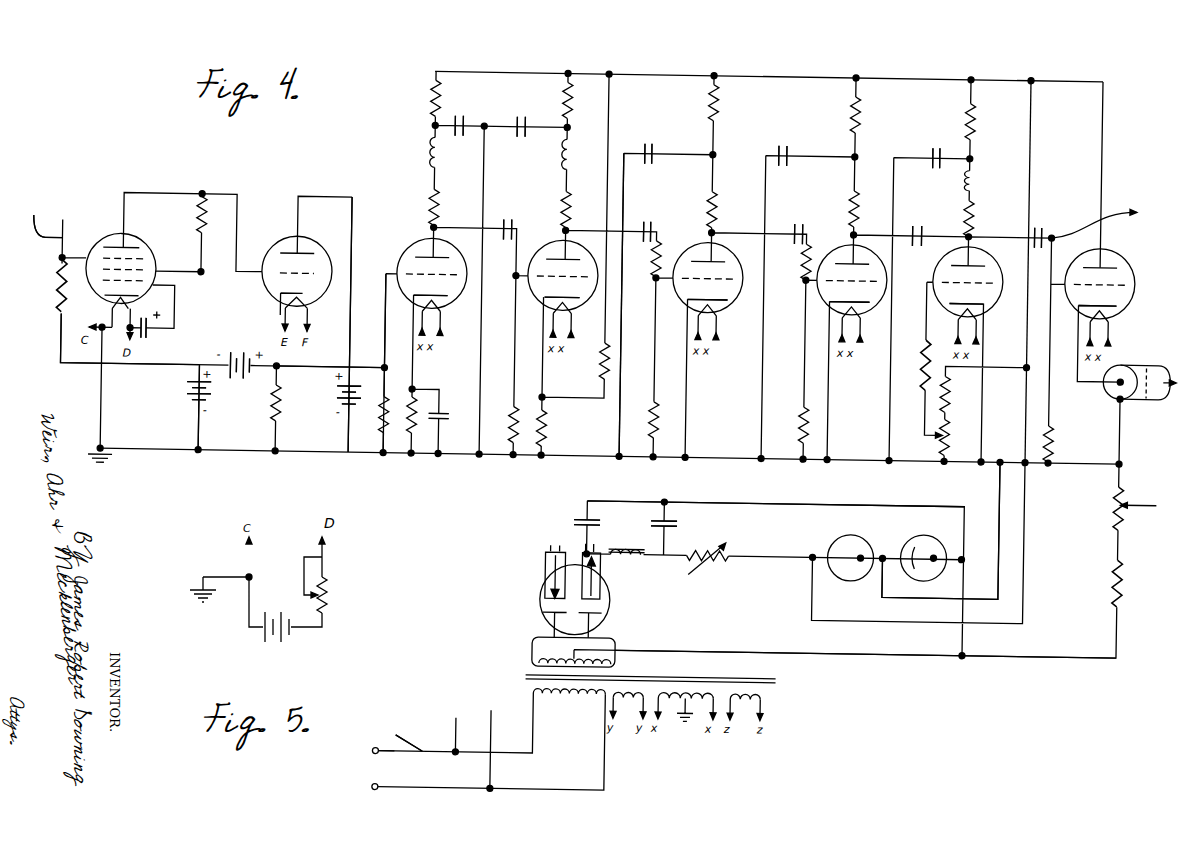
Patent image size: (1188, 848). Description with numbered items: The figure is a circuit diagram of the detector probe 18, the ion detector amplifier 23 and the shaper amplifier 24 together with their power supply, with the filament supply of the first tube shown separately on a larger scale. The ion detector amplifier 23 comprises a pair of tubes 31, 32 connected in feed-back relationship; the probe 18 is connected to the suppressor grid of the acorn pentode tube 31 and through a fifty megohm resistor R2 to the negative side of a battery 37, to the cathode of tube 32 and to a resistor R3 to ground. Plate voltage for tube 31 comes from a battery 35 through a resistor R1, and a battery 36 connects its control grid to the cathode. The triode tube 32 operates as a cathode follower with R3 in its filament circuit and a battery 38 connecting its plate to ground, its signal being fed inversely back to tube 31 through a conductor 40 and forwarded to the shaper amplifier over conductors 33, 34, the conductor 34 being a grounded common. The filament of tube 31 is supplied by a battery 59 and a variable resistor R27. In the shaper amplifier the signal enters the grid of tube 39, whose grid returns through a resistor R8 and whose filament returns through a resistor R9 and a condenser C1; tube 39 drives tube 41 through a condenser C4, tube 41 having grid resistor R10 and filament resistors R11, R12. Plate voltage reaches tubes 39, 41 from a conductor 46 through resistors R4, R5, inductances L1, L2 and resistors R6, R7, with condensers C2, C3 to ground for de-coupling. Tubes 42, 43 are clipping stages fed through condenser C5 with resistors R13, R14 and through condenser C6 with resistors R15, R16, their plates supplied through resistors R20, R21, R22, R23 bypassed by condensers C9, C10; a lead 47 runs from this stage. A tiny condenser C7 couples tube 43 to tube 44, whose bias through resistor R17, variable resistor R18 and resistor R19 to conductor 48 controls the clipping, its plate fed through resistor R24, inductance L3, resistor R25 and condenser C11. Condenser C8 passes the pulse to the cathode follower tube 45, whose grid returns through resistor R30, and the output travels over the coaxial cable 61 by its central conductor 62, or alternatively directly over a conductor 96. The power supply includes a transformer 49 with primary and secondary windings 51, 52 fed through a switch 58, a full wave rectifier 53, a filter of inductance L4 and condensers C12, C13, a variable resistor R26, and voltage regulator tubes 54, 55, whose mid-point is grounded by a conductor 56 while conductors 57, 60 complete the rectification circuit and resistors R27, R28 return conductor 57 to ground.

In FIG. 4, the detector probe 18 is at (40, 219).
In FIG. 4, the ion detector amplifier 23 is at (238, 160).
In FIG. 4, the shaper amplifier 24 is at (770, 64).
In FIG. 4, the tube 31 is at (137, 250).
In FIG. 4, the tube 32 is at (314, 247).
In FIG. 4, the conductor 33 is at (362, 368).
In FIG. 4, the conductor 34 is at (238, 458).
In FIG. 4, the battery 35 is at (190, 404).
In FIG. 4, the battery 36 is at (151, 346).
In FIG. 4, the battery 37 is at (246, 386).
In FIG. 4, the battery 38 is at (338, 412).
In FIG. 4, the tube 39 is at (414, 248).
In FIG. 4, the conductor 40 is at (88, 374).
In FIG. 4, the tube 41 is at (551, 248).
In FIG. 4, the tube 42 is at (701, 252).
In FIG. 4, the tube 43 is at (845, 252).
In FIG. 4, the tube 44 is at (961, 252).
In FIG. 4, the isolating output amplifier tube 45 is at (1126, 264).
In FIG. 4, the conductor 46 is at (524, 74).
In FIG. 4, the conductor 47 is at (626, 230).
In FIG. 4, the conductor 48 is at (1029, 198).
In FIG. 4, the transformer 49 is at (631, 682).
In FIG. 4, the primary winding 51 is at (569, 705).
In FIG. 4, the secondary winding 52 is at (534, 654).
In FIG. 4, the full wave rectifier 53 is at (540, 602).
In FIG. 4, the voltage regulator tube 54 is at (858, 544).
In FIG. 4, the voltage regulator tube 55 is at (922, 542).
In FIG. 4, the conductor 56 is at (998, 502).
In FIG. 4, the conductor 57 is at (776, 652).
In FIG. 4, the switch 58 is at (412, 754).
In FIG. 5, the battery 59 is at (274, 644).
In FIG. 4, the conductor 60 is at (808, 504).
In FIG. 4, the coaxial cable 61 is at (1142, 364).
In FIG. 4, the central conductor 62 is at (1141, 398).
In FIG. 4, the conductor 96 is at (1097, 213).
In FIG. 4, the resistor R1 is at (211, 215).
In FIG. 4, the resistor R2 is at (46, 285).
In FIG. 4, the resistor R3 is at (289, 403).
In FIG. 4, the resistor R4 is at (445, 98).
In FIG. 4, the resistor R5 is at (577, 100).
In FIG. 4, the resistor R6 is at (444, 207).
In FIG. 4, the resistor R7 is at (576, 209).
In FIG. 4, the resistor R8 is at (374, 414).
In FIG. 4, the resistor R9 is at (403, 415).
In FIG. 4, the resistor R10 is at (502, 424).
In FIG. 4, the resistor R11 is at (593, 361).
In FIG. 4, the resistor R12 is at (556, 428).
In FIG. 4, the resistor R13 is at (644, 258).
In FIG. 4, the resistor R14 is at (642, 419).
In FIG. 4, the resistor R15 is at (793, 264).
In FIG. 4, the resistor R16 is at (790, 425).
In FIG. 4, the resistor R17 is at (910, 365).
In FIG. 4, the variable resistor R18 is at (959, 437).
In FIG. 4, the resistor R19 is at (960, 394).
In FIG. 4, the resistor R20 is at (728, 103).
In FIG. 4, the resistor R21 is at (870, 115).
In FIG. 4, the resistor R22 is at (727, 210).
In FIG. 4, the resistor R23 is at (869, 209).
In FIG. 4, the resistor R24 is at (985, 122).
In FIG. 4, the resistor R25 is at (985, 219).
In FIG. 4, the variable resistor R26 is at (708, 564).
In FIG. 4, the resistor R27 is at (1132, 583).
In FIG. 5, the resistor R27 is at (341, 595).
In FIG. 4, the resistor R28 is at (1101, 509).
In FIG. 4, the resistor R30 is at (1064, 444).
In FIG. 4, the condenser C1 is at (446, 401).
In FIG. 4, the condenser C2 is at (467, 117).
In FIG. 4, the condenser C3 is at (519, 116).
In FIG. 4, the condenser C4 is at (502, 218).
In FIG. 4, the condenser C5 is at (657, 224).
In FIG. 4, the condenser C6 is at (801, 226).
In FIG. 4, the condenser C7 is at (916, 227).
In FIG. 4, the condenser C8 is at (1042, 231).
In FIG. 4, the condenser C9 is at (648, 145).
In FIG. 4, the condenser C10 is at (794, 146).
In FIG. 4, the condenser C11 is at (942, 148).
In FIG. 4, the condenser C12 is at (573, 523).
In FIG. 4, the condenser C13 is at (676, 525).
In FIG. 4, the inductance L1 is at (445, 152).
In FIG. 4, the inductance L2 is at (577, 154).
In FIG. 4, the inductance L3 is at (981, 181).
In FIG. 4, the inductance L4 is at (626, 566).